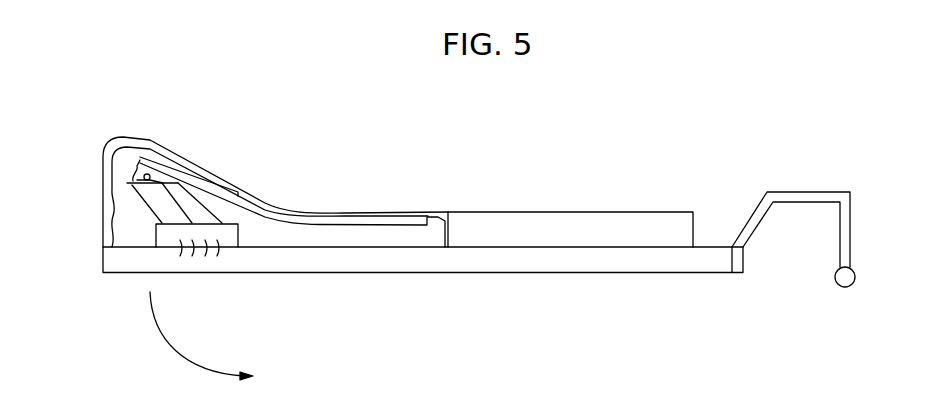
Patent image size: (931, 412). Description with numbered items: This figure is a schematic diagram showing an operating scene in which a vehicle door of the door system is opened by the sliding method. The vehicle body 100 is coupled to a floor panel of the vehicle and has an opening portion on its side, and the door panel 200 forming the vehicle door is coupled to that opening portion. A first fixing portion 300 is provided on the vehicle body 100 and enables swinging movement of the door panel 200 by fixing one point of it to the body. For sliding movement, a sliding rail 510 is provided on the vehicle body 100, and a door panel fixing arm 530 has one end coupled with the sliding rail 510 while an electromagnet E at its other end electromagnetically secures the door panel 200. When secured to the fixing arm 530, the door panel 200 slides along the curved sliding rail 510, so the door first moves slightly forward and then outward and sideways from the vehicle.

The vehicle body 100 is at (522, 225).
The door panel 200 is at (378, 260).
The first fixing portion 300 is at (822, 180).
The sliding rail 510 is at (352, 222).
The door panel fixing arm 530 is at (142, 192).
The electromagnet E is at (238, 237).